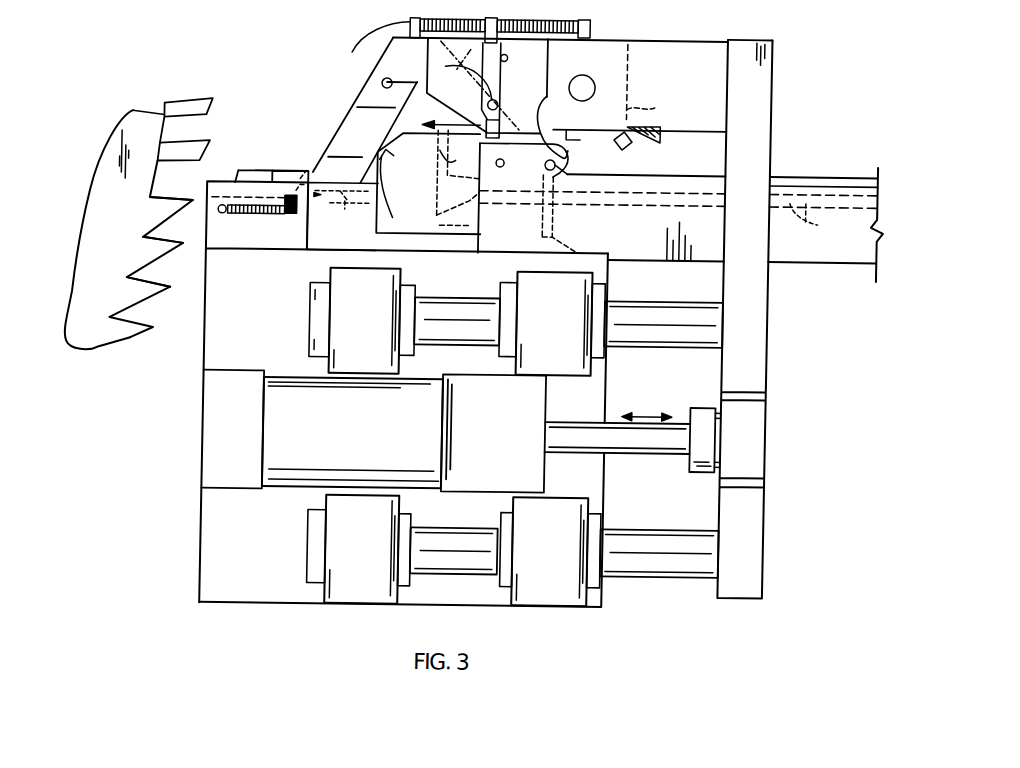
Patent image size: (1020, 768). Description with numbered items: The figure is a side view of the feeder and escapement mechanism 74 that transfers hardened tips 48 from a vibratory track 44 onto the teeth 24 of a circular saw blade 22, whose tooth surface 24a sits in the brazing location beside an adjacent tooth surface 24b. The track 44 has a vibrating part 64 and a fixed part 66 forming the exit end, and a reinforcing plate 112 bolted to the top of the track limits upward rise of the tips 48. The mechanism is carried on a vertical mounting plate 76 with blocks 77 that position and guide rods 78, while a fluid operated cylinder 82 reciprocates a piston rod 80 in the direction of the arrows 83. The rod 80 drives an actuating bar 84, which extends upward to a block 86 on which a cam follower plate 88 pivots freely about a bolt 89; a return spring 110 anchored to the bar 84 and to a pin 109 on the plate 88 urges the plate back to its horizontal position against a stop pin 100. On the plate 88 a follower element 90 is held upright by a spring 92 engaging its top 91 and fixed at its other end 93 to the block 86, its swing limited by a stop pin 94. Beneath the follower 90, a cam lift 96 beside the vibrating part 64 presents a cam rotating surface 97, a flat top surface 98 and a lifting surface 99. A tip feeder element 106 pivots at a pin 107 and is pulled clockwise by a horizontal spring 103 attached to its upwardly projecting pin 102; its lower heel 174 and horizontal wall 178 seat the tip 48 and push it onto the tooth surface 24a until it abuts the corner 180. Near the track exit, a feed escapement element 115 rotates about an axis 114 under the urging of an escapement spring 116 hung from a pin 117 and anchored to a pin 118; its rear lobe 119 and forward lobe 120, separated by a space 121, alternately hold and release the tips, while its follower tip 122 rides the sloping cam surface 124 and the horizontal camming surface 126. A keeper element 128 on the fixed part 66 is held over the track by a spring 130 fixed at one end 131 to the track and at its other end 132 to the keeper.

The circular saw blade 22 is at (78, 297).
The teeth 24 is at (192, 173).
The upper surface of tooth 24a is at (159, 262).
The tooth 24b is at (146, 299).
The track 44 is at (836, 181).
The tip 48 is at (196, 107).
The vibrating part of track 64 is at (812, 260).
The fixed part of track 66 is at (230, 256).
The feeder and escapement mechanism 74 is at (298, 67).
The mounting plate 76 is at (206, 534).
The blocks 77 is at (336, 322).
The guide rods 78 is at (688, 346).
The piston rod 80 is at (673, 458).
The fluid operated cylinder 82 is at (294, 490).
The arrows 83 is at (652, 414).
The actuating bar 84 is at (768, 362).
The block 86 is at (697, 85).
The cam follower plate 88 is at (523, 86).
The bolt 89 is at (591, 87).
The follower element 90 is at (501, 78).
The top of follower element 91 is at (504, 58).
The spring 92 is at (562, 68).
The other end of spring 93 is at (640, 86).
The stop pin 94 is at (472, 105).
The cam lift 96 is at (378, 235).
The cam rotating surface 97 is at (449, 158).
The flat top surface 98 is at (396, 158).
The lifting surface 99 is at (397, 191).
The stop pin 100 is at (652, 106).
The pin 102 is at (401, 32).
The horizontal spring 103 is at (403, 22).
The tip feeder element 106 is at (348, 145).
The pin 107 is at (378, 84).
The pin 109 is at (625, 148).
The return spring 110 is at (652, 139).
The reinforcing plate 112 is at (806, 172).
The pivot axis 114 is at (519, 164).
The feed escapement element 115 is at (557, 127).
The escapement spring 116 is at (553, 217).
The pin 117 is at (554, 164).
The pin 118 is at (558, 237).
The rear lobe 119 is at (520, 212).
The forward lobe 120 is at (456, 225).
The space between lobes 121 is at (478, 201).
The follower tip 122 is at (440, 173).
The cam surface 124 is at (438, 115).
The camming surface 126 is at (589, 144).
The keeper element 128 is at (267, 173).
The spring 130 is at (240, 219).
The one end of spring 131 is at (253, 220).
The other end of spring 132 is at (294, 218).
The heel 174 is at (342, 216).
The horizontal wall 178 is at (295, 181).
The corner of tooth 180 is at (149, 241).